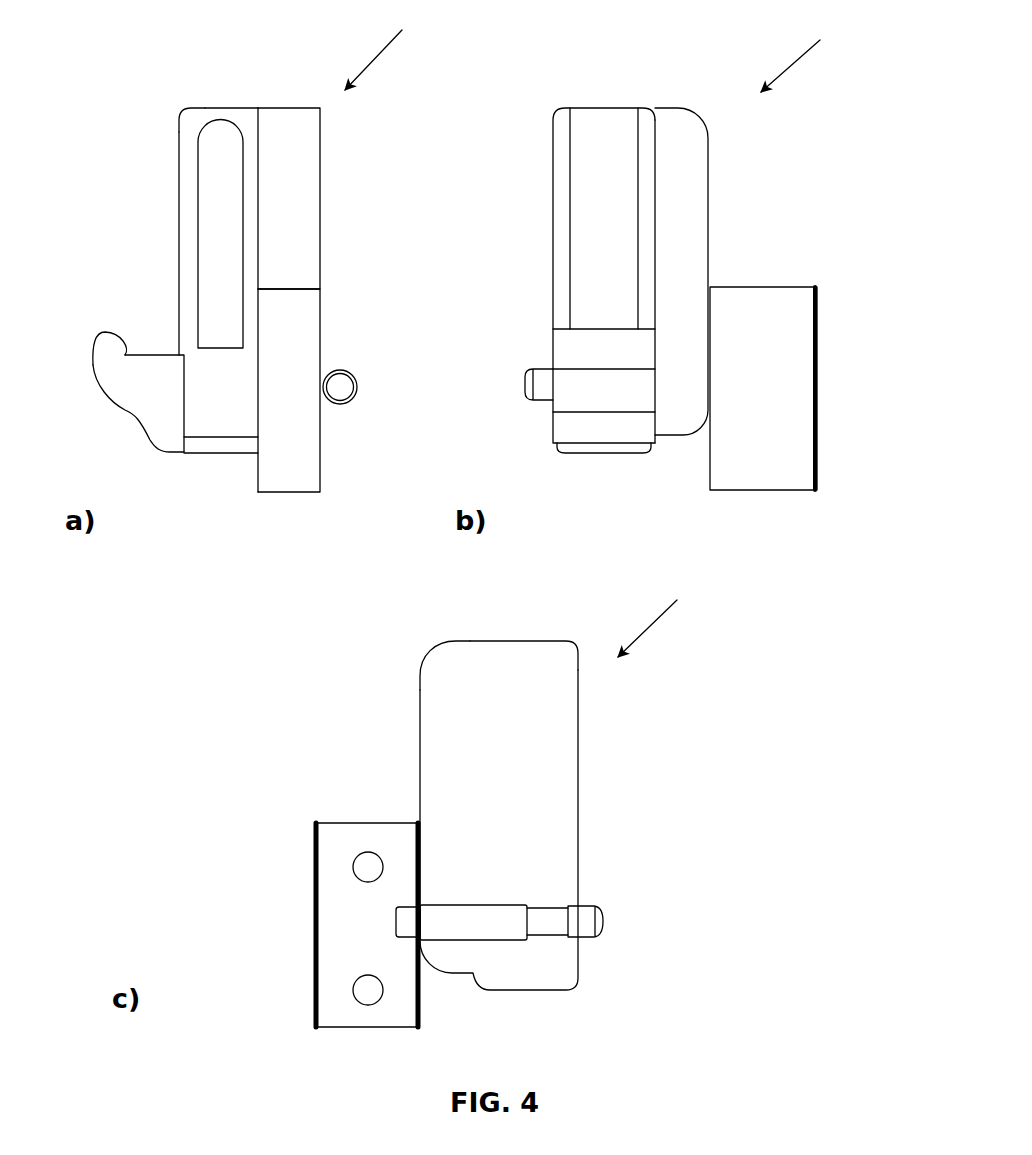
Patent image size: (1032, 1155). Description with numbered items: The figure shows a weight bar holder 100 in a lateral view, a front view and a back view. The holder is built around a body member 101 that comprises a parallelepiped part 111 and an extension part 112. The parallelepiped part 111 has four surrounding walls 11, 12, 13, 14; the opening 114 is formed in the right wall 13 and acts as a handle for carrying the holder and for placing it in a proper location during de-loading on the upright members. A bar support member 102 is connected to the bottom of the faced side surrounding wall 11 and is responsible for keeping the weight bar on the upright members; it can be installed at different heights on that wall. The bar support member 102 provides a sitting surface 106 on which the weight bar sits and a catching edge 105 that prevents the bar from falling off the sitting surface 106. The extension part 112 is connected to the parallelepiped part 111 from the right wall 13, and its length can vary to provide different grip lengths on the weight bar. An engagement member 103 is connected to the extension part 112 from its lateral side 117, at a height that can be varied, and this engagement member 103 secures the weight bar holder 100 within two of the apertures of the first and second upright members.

The weight bar holder 100 is at (605, 333).
The surrounding wall 11 is at (178, 198).
The surrounding wall 12 is at (320, 190).
The right wall 13 is at (188, 128).
The surrounding wall 14 is at (560, 760).
The body member 101 is at (222, 420).
The bar support member 102 is at (122, 390).
The engagement member 103 is at (302, 320).
The catching edge 105 is at (108, 348).
The sitting surface 106 is at (152, 355).
The parallelepiped part 111 is at (594, 108).
The extension part 112 is at (683, 128).
The opening 114 is at (226, 142).
The lateral side 117 is at (300, 244).